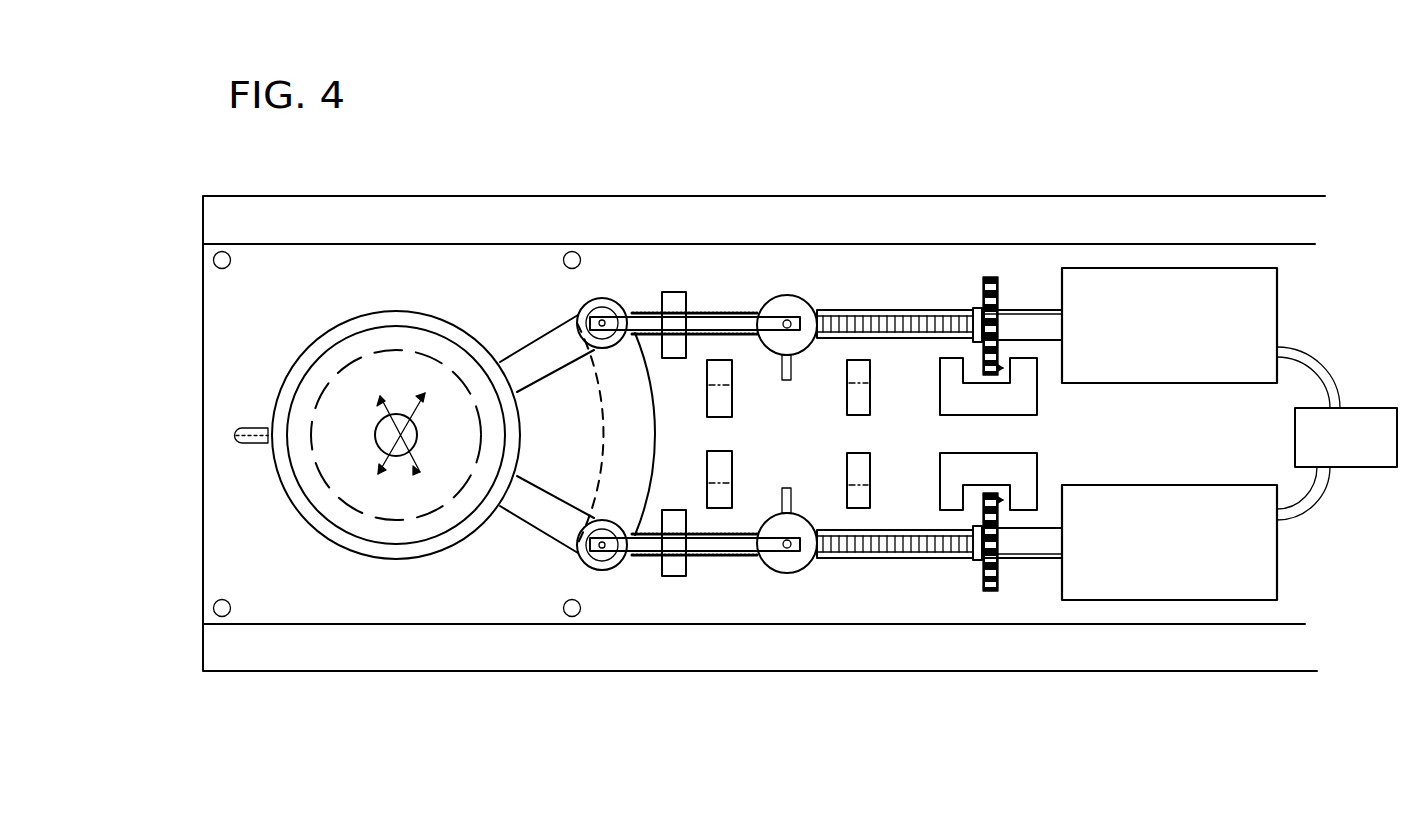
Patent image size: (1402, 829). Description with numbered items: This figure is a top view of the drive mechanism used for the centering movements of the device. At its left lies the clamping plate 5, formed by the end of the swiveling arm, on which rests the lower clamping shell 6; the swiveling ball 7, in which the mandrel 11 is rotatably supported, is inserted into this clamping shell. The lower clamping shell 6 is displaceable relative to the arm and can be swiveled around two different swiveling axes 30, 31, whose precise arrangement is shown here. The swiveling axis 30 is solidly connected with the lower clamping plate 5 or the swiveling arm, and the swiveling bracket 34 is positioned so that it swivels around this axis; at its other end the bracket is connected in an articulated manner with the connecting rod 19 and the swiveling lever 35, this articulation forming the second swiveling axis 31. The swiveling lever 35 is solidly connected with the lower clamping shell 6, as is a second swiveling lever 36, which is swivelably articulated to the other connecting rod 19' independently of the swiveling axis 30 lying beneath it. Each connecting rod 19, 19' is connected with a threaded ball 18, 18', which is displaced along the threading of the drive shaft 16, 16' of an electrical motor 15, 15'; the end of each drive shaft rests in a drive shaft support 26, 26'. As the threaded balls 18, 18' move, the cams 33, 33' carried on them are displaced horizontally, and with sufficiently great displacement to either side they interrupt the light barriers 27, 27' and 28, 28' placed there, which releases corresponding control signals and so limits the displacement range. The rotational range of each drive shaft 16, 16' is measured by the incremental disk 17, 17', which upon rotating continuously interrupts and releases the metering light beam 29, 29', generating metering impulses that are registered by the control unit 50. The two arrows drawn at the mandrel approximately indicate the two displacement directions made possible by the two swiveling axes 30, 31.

The clamping plate 5 is at (385, 277).
The lower clamping shell 6 is at (318, 346).
The swiveling ball 7 is at (327, 512).
The mandrel 11 is at (374, 430).
The electrical motor 15 is at (1196, 598).
The electrical motor 15' is at (1201, 281).
The drive shaft 16 is at (1027, 627).
The drive shaft 16' is at (1031, 248).
The incremental disk 17 is at (1007, 611).
The incremental disk 17' is at (1009, 264).
The threaded ball 18 is at (787, 621).
The threaded ball 18' is at (787, 254).
The connecting rod 19 is at (615, 624).
The connecting rod 19' is at (612, 253).
The drive shaft support 26 is at (695, 619).
The drive shaft support 26' is at (695, 256).
The light beam detector 27 is at (725, 590).
The light beam detector 27' is at (721, 285).
The light beam detector 28 is at (895, 591).
The light beam detector 28' is at (895, 284).
The metering light beam 29 is at (986, 591).
The metering light beam 29' is at (986, 284).
The swiveling axis 30 is at (607, 348).
The swiveling axis 31 is at (604, 548).
The cam 33 is at (787, 476).
The cam 33' is at (789, 393).
The swiveling bracket 34 is at (632, 428).
The swiveling lever 35 is at (528, 497).
The second swiveling lever 36 is at (540, 352).
The control unit 50 is at (1360, 420).